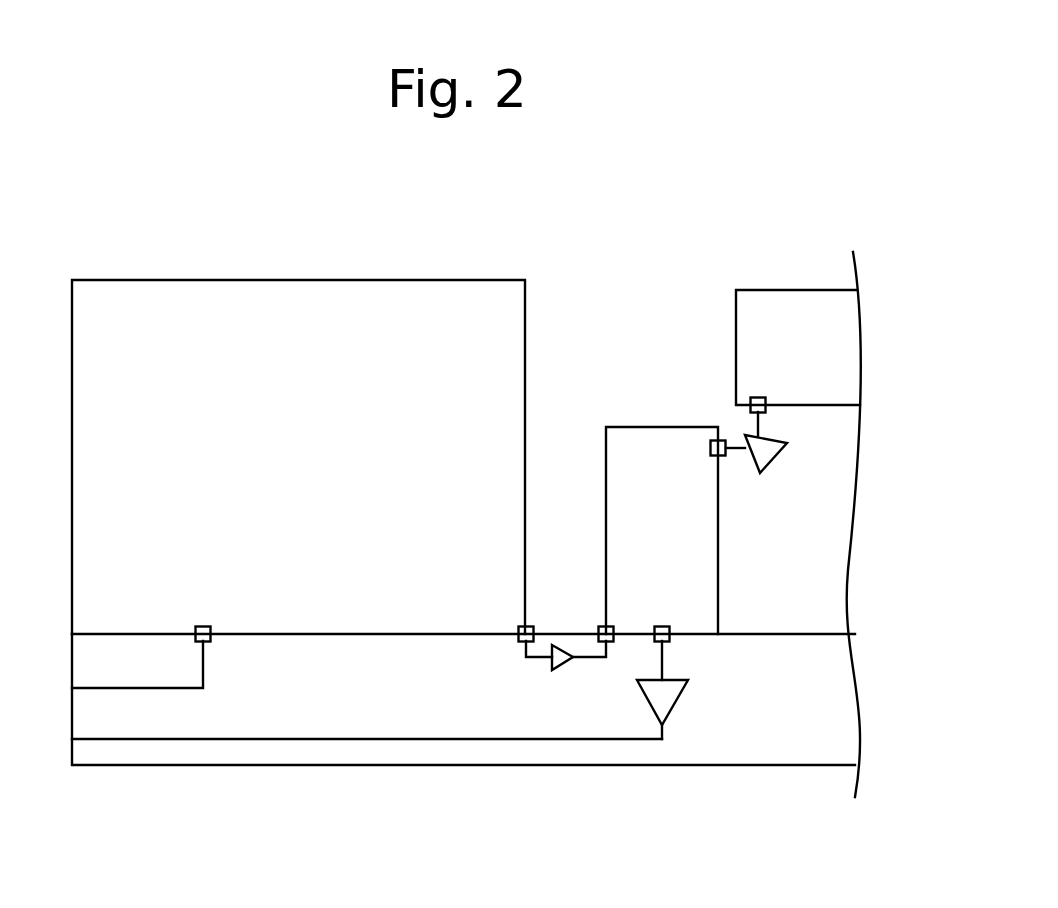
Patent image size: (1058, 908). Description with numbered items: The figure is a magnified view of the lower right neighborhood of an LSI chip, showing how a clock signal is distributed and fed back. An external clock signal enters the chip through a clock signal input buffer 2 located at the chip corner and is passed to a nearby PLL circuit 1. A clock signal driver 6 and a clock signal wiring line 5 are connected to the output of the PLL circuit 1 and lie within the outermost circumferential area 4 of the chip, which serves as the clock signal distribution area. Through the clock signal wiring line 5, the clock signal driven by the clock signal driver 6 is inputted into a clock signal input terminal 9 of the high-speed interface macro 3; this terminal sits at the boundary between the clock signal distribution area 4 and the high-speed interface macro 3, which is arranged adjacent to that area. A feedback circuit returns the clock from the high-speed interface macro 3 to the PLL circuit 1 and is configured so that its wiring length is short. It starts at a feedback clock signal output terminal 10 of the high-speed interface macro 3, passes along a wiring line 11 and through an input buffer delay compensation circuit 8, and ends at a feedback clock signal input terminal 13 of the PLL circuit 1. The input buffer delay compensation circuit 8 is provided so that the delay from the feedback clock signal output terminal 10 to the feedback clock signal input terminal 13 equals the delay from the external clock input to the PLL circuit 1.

The PLL circuit 1 is at (662, 436).
The clock signal input buffer 2 is at (768, 455).
The high-speed interface macro 3 is at (250, 302).
The outermost circumferential area 4 is at (707, 763).
The clock signal wiring line 5 is at (207, 665).
The clock signal driver 6 is at (672, 700).
The input buffer delay compensation circuit 8 is at (558, 663).
The clock signal input terminal 9 is at (203, 626).
The feedback clock signal output terminal 10 is at (520, 627).
The wiring line 11 is at (540, 658).
The feedback clock signal input terminal 13 is at (604, 627).